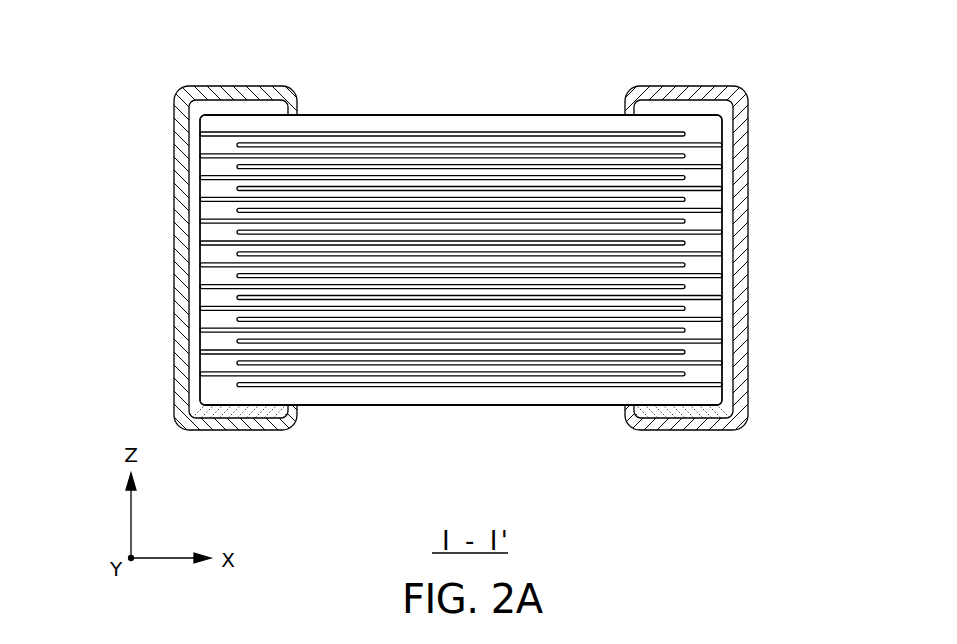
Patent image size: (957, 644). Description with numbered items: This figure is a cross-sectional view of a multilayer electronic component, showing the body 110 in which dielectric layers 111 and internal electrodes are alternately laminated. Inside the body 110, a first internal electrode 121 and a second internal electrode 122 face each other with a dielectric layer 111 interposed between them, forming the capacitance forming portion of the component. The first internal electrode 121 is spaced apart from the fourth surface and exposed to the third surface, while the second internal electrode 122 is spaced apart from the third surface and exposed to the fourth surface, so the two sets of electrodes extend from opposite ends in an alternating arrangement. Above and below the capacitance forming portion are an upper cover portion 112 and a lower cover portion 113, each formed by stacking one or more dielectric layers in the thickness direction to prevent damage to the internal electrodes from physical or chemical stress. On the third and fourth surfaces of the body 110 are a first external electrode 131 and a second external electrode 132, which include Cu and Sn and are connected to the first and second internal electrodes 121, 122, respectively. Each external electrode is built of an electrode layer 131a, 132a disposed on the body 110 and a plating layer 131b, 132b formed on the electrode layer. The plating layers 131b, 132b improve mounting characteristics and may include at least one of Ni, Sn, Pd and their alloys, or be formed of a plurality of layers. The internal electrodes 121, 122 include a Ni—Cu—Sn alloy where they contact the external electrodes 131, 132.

The body 110 is at (405, 115).
The dielectric layer 111 is at (343, 144).
The upper cover portion 112 is at (452, 125).
The lower cover portion 113 is at (450, 396).
The first internal electrode 121 is at (510, 132).
The second internal electrode 122 is at (578, 143).
The first external electrode 131 is at (478, 258).
The electrode layer 131a is at (178, 177).
The plating layer 131b is at (176, 210).
The second external electrode 132 is at (478, 258).
The electrode layer 132a is at (747, 181).
The plating layer 132b is at (838, 170).